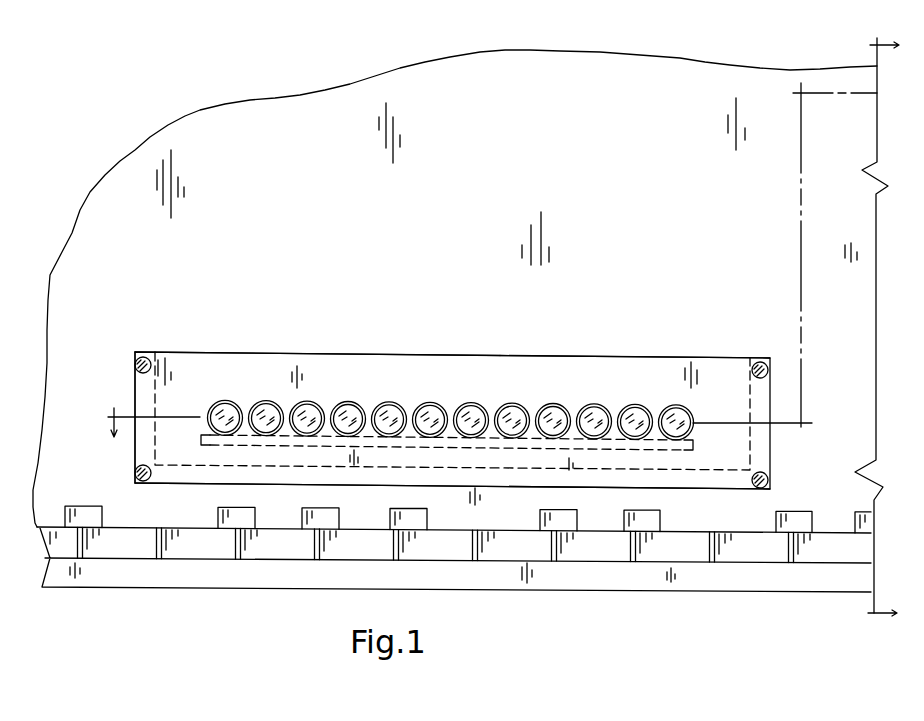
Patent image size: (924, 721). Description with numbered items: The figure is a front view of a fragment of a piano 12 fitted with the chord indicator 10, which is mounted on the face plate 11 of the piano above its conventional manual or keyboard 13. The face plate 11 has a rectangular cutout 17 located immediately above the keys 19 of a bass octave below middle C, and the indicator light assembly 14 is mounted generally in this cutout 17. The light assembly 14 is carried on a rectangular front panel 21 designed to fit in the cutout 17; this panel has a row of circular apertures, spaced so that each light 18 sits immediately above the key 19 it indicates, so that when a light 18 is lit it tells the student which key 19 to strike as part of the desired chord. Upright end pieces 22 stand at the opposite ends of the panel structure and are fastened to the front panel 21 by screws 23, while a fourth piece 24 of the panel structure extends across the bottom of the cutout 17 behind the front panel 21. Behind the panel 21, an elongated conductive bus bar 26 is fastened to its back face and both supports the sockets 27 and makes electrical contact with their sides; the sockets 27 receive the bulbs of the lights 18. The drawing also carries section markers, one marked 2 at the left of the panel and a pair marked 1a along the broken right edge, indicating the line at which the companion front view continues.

The chord indicator 10 is at (737, 354).
The face plate 11 is at (591, 172).
The piano 12 is at (481, 52).
The manual or keyboard 13 is at (193, 563).
The light assembly 14 is at (552, 356).
The rectangular cutout 17 is at (770, 487).
The light 18 is at (352, 404).
The keys 19 is at (576, 516).
The front panel 21 is at (266, 353).
The upright end pieces 22 is at (135, 372).
The screws 23 is at (758, 474).
The fourth piece of the panel structure 24 is at (430, 488).
The bus bar 26 is at (655, 451).
The sockets 27 is at (513, 404).
The section line 2 is at (460, 435).
The section line 1a is at (846, 333).